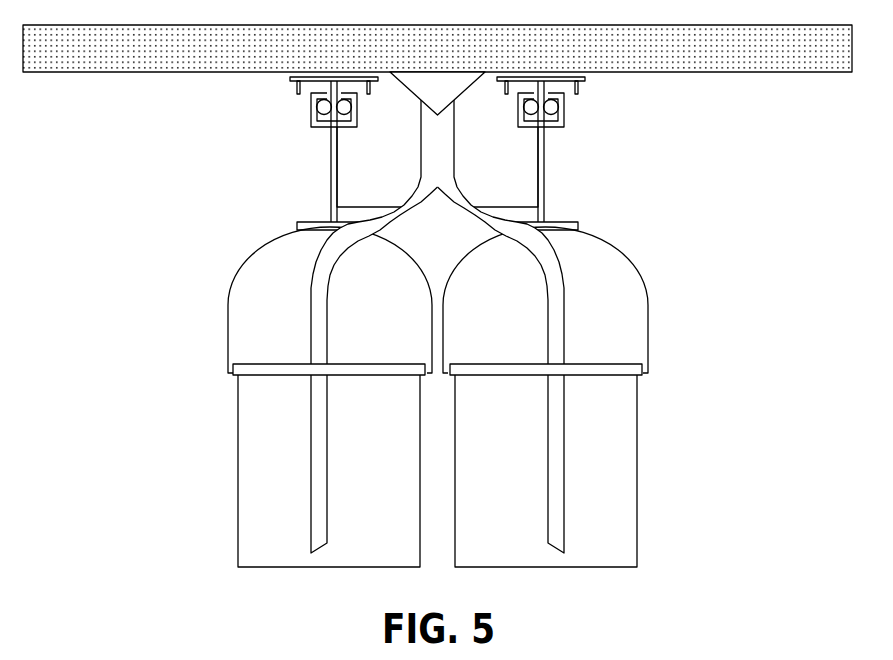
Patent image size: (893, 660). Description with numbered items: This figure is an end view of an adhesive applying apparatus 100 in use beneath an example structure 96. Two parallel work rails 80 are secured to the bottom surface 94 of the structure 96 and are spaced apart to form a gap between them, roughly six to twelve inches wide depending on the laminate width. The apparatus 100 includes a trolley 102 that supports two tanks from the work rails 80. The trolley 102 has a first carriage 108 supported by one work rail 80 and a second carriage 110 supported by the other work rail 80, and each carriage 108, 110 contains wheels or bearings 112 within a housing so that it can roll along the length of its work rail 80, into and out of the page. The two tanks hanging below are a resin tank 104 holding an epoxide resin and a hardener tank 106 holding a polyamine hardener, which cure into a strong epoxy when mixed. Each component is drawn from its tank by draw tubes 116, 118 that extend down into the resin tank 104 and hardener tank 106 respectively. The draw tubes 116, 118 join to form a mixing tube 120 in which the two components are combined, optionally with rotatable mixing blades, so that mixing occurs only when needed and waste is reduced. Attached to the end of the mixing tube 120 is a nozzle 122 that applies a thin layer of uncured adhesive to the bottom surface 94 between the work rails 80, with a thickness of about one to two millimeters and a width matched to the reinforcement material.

The work rails 80 is at (272, 100).
The bottom surface 94 is at (677, 72).
The structure 96 is at (790, 58).
The adhesive applying apparatus 100 is at (444, 319).
The trolley 102 is at (306, 197).
The resin tank 104 is at (178, 343).
The hardener tank 106 is at (689, 343).
The first carriage 108 is at (351, 100).
The second carriage 110 is at (522, 118).
The wheels or bearings 112 is at (340, 116).
The draw tube 116 is at (318, 455).
The draw tube 118 is at (557, 455).
The mixing tube 120 is at (437, 326).
The nozzle 122 is at (455, 97).